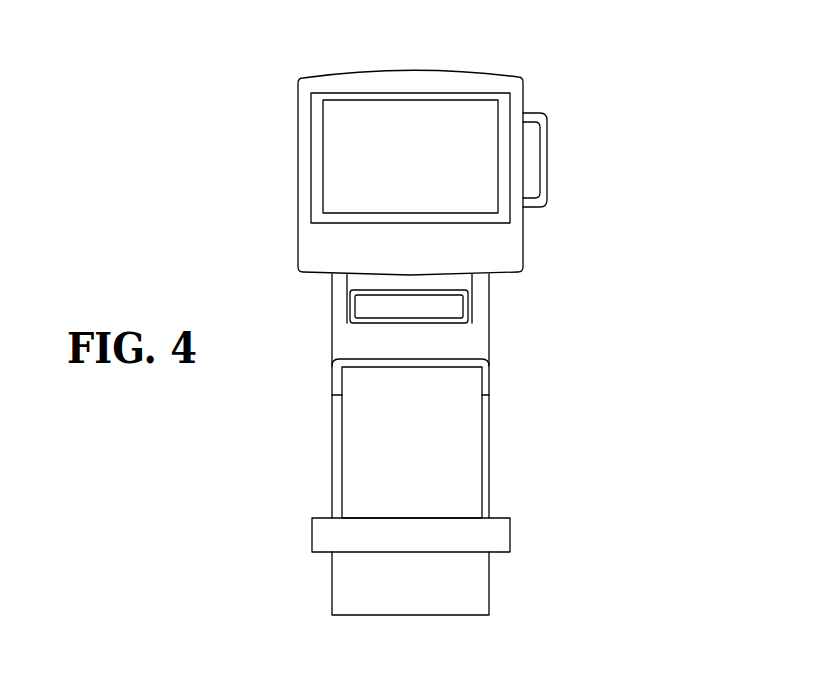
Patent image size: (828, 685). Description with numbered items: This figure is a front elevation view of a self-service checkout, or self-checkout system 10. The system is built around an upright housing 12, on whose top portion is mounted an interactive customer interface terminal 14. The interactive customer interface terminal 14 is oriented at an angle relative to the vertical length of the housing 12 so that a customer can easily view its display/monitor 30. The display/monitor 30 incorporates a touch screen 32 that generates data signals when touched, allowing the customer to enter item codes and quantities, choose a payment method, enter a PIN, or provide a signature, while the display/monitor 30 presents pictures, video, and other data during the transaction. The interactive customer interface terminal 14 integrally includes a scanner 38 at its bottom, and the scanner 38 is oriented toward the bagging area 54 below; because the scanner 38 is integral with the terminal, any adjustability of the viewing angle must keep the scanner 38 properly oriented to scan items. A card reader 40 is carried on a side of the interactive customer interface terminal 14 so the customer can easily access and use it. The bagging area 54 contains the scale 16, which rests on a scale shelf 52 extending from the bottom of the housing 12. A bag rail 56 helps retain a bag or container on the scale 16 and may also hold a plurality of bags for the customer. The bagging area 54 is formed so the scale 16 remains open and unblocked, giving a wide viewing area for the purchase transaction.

The self-checkout system 10 is at (584, 64).
The housing 12 is at (343, 342).
The interactive customer interface terminal 14 is at (346, 72).
The scale 16 is at (320, 533).
The display/monitor 30 is at (460, 97).
The touch screen 32 is at (338, 175).
The scanner 38 is at (457, 304).
The card reader 40 is at (532, 162).
The scale shelf 52 is at (475, 585).
The bagging area 54 is at (371, 453).
The bag rail 56 is at (483, 377).